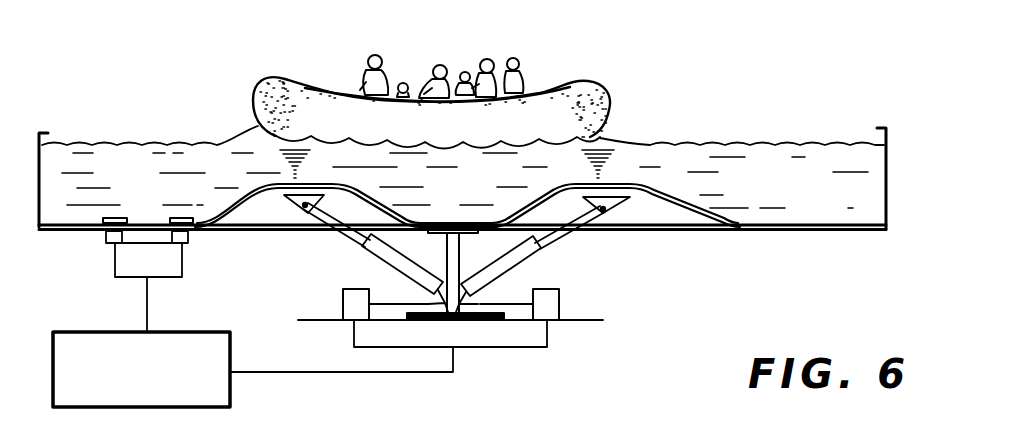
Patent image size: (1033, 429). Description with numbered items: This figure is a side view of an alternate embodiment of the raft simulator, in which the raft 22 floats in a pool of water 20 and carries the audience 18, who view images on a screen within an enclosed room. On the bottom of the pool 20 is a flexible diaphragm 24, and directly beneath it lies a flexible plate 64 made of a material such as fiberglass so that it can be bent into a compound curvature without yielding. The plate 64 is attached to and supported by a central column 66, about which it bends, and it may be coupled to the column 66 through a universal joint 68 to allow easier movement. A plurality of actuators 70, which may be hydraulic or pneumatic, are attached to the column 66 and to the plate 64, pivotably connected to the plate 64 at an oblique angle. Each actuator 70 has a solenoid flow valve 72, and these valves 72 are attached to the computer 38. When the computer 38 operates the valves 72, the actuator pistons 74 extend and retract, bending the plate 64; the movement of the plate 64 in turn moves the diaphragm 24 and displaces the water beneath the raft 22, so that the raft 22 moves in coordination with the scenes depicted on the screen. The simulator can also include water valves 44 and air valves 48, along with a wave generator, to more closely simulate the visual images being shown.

The audience 18 is at (528, 49).
The pool of water 20 is at (463, 167).
The raft 22 is at (598, 97).
The flexible diaphragm 24 is at (675, 201).
The computer 38 is at (141, 369).
The water valves 44 is at (107, 238).
The air valves 48 is at (190, 237).
The flexible plate 64 is at (561, 212).
The column 66 is at (473, 324).
The universal joint 68 is at (470, 236).
The actuators 70 is at (365, 250).
The solenoid flow valve 72 is at (350, 302).
The actuator pistons 74 is at (622, 210).